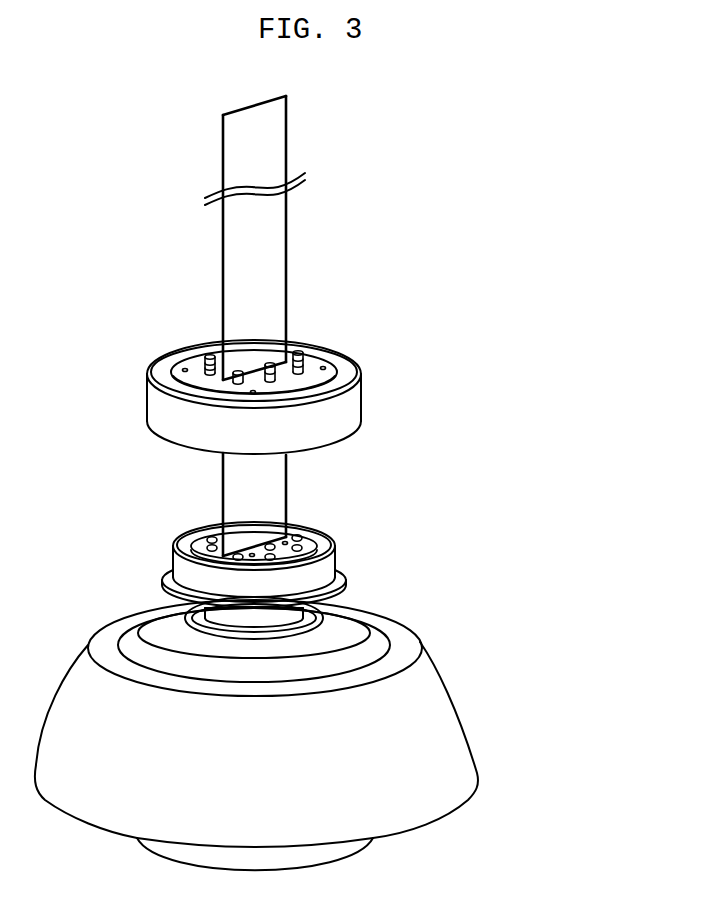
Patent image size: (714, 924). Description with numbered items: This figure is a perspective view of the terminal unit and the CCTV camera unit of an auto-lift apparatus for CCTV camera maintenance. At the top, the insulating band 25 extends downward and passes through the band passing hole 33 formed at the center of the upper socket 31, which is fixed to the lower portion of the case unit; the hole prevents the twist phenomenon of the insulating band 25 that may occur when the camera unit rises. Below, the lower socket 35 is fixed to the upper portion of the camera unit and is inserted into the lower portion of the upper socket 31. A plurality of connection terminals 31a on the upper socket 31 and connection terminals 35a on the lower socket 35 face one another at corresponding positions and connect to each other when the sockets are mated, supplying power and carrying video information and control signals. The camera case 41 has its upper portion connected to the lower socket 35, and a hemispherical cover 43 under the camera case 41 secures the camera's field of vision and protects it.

The insulating band 25 is at (267, 250).
The upper socket 31 is at (343, 420).
The connection terminals 31a is at (312, 368).
The band passing hole 33 is at (150, 380).
The lower socket 35 is at (322, 572).
The connection terminals 35a is at (304, 546).
The camera case 41 is at (437, 748).
The hemispherical cover 43 is at (293, 857).